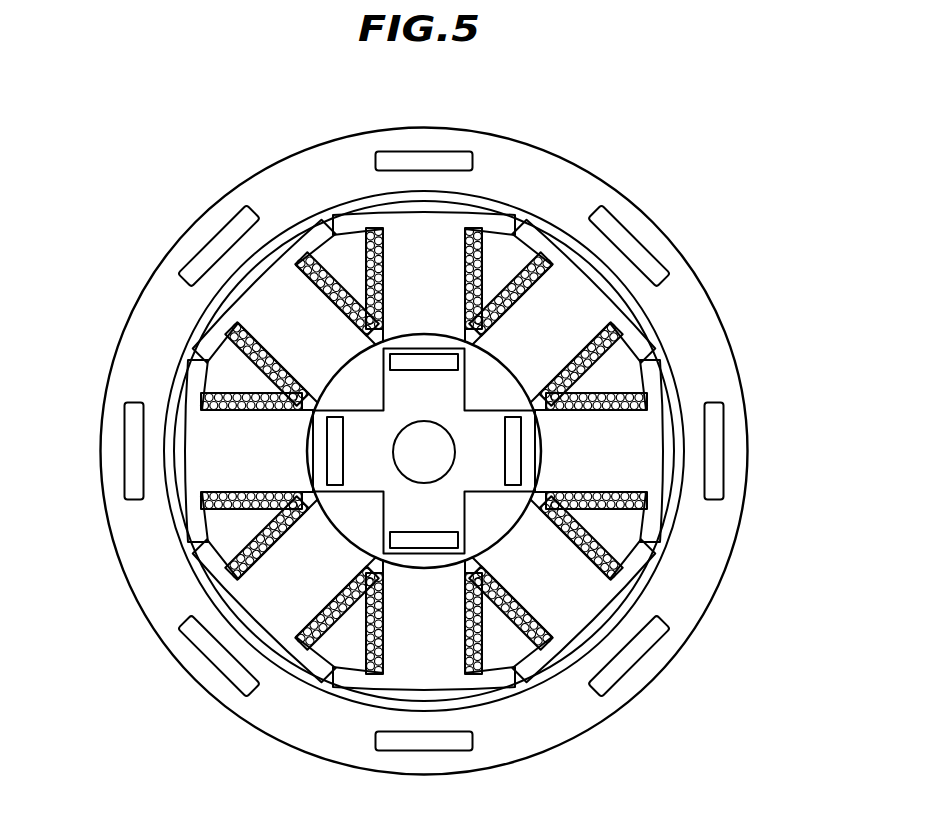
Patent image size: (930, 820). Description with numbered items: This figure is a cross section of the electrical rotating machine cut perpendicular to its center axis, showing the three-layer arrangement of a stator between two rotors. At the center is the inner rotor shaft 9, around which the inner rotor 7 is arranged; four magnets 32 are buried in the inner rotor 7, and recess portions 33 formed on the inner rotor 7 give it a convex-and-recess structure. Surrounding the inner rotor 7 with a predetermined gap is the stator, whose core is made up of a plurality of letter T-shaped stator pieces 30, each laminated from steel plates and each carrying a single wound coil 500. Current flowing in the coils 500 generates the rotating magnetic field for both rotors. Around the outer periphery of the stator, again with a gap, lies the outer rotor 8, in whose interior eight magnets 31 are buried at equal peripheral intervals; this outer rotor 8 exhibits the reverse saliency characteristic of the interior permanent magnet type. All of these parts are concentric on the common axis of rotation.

The inner rotor 7 is at (497, 453).
The outer rotor 8 is at (516, 168).
The inner rotor shaft 9 is at (408, 452).
The stator piece 30 is at (440, 223).
The magnet 31 is at (428, 157).
The magnet 32 is at (417, 358).
The recess portion 33 is at (352, 393).
The coil 500 is at (336, 278).